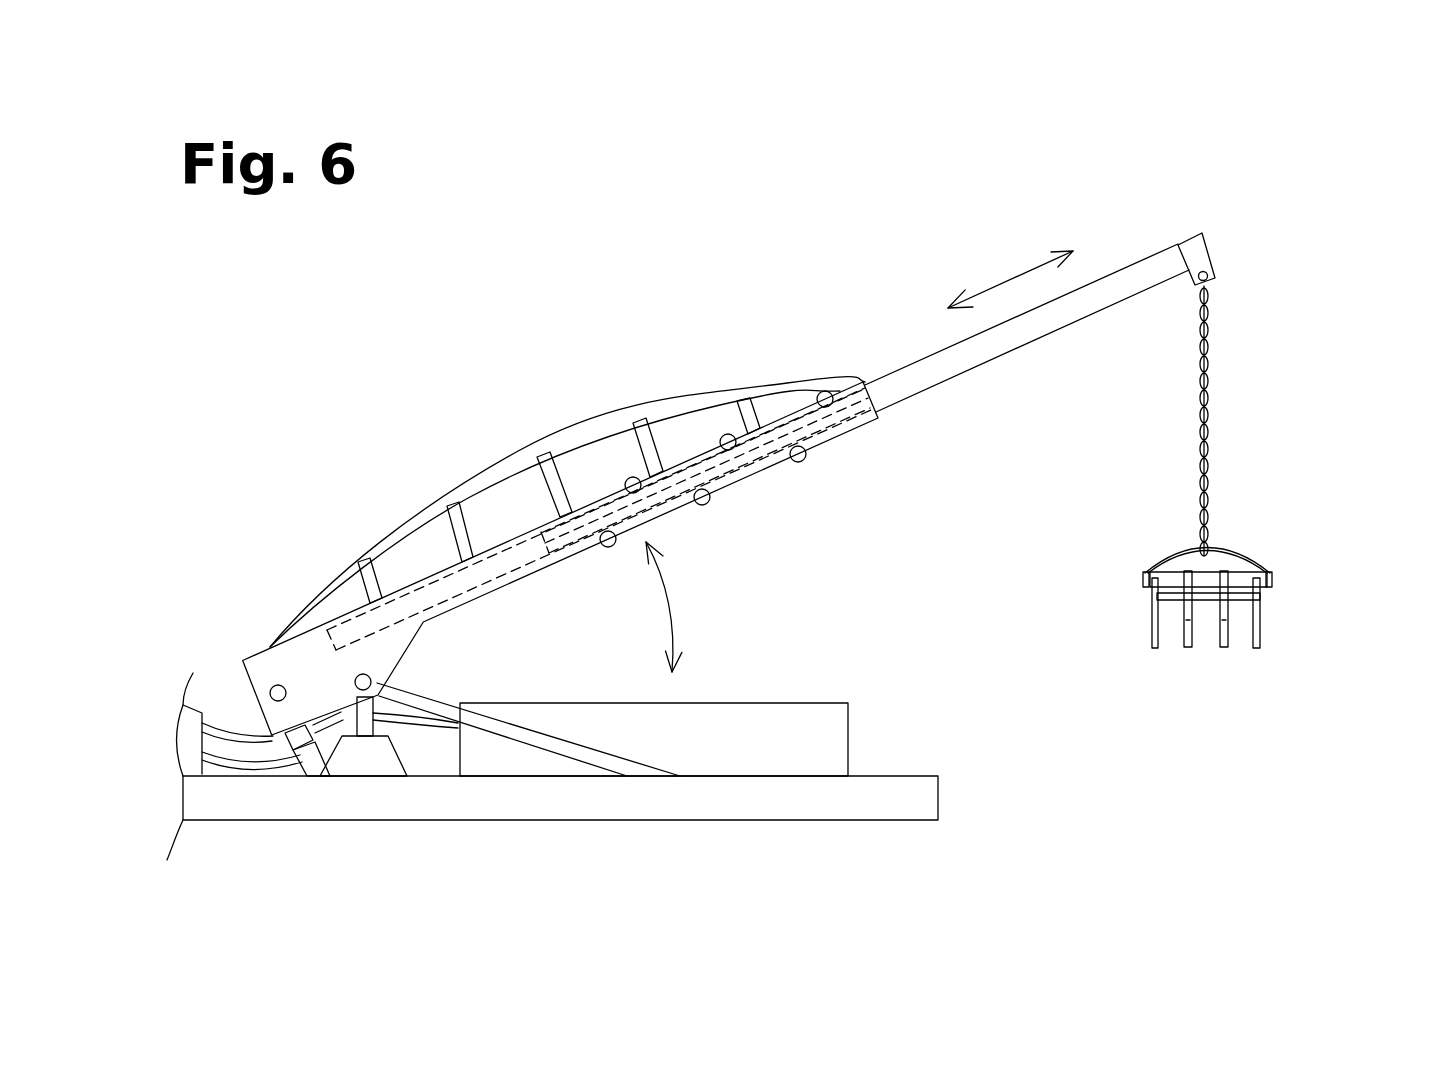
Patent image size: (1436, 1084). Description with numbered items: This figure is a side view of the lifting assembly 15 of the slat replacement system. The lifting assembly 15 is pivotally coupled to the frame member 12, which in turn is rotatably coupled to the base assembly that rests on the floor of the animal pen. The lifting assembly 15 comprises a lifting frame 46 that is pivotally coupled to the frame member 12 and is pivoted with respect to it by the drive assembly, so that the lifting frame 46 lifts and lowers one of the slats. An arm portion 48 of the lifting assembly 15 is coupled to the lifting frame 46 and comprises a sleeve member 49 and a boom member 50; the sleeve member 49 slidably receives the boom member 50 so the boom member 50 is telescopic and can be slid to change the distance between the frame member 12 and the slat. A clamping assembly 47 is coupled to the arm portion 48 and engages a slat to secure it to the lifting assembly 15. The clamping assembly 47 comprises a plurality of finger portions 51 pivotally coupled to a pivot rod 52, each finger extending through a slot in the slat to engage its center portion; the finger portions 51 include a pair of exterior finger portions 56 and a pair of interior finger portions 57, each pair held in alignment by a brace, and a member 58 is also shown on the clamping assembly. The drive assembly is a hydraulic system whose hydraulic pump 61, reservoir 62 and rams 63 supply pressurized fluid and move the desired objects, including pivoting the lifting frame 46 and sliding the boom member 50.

The frame member 12 is at (880, 805).
The lifting assembly 15 is at (826, 280).
The lifting frame 46 is at (873, 420).
The clamping assembly 47 is at (1258, 528).
The arm portion 48 is at (1140, 275).
The sleeve member 49 is at (500, 472).
The boom member 50 is at (1045, 320).
The finger portions 51 is at (1155, 650).
The pivot rod 52 is at (1173, 578).
The exterior finger portions 56 is at (1153, 631).
The interior finger portions 57 is at (1192, 634).
The arched handle 58 is at (1242, 597).
The hydraulic pump 61 is at (192, 722).
The reservoir 62 is at (668, 737).
The rams 63 is at (393, 613).